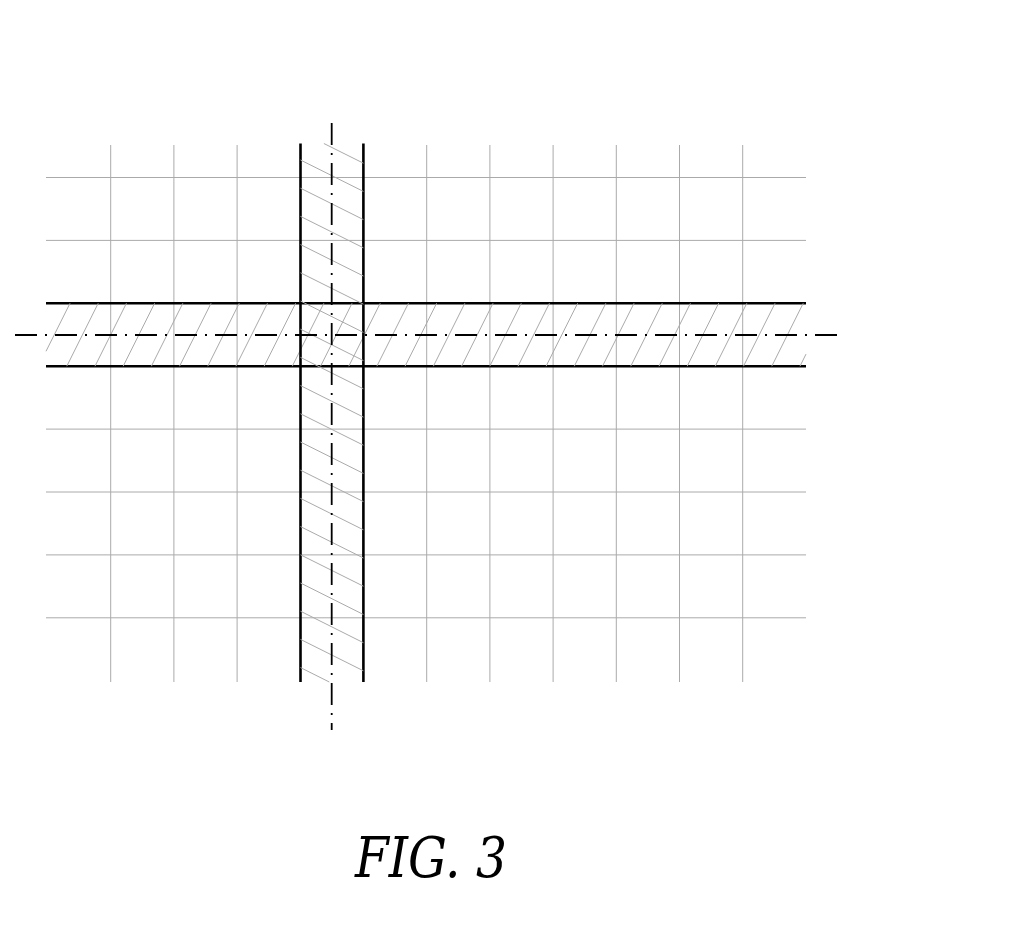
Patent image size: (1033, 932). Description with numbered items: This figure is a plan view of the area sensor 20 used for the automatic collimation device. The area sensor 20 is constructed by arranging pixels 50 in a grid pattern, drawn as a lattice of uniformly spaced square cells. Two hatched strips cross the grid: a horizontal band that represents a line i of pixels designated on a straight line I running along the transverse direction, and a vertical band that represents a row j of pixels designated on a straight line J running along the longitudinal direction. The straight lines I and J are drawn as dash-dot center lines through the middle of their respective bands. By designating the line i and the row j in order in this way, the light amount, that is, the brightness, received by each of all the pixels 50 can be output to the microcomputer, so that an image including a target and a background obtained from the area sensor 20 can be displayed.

The area sensor 20 is at (433, 390).
The pixels 50 is at (203, 205).
The straight line I along the transverse direction I is at (784, 335).
The line i is at (658, 345).
The straight line J along the longitudinal direction J is at (332, 717).
The row j is at (320, 662).